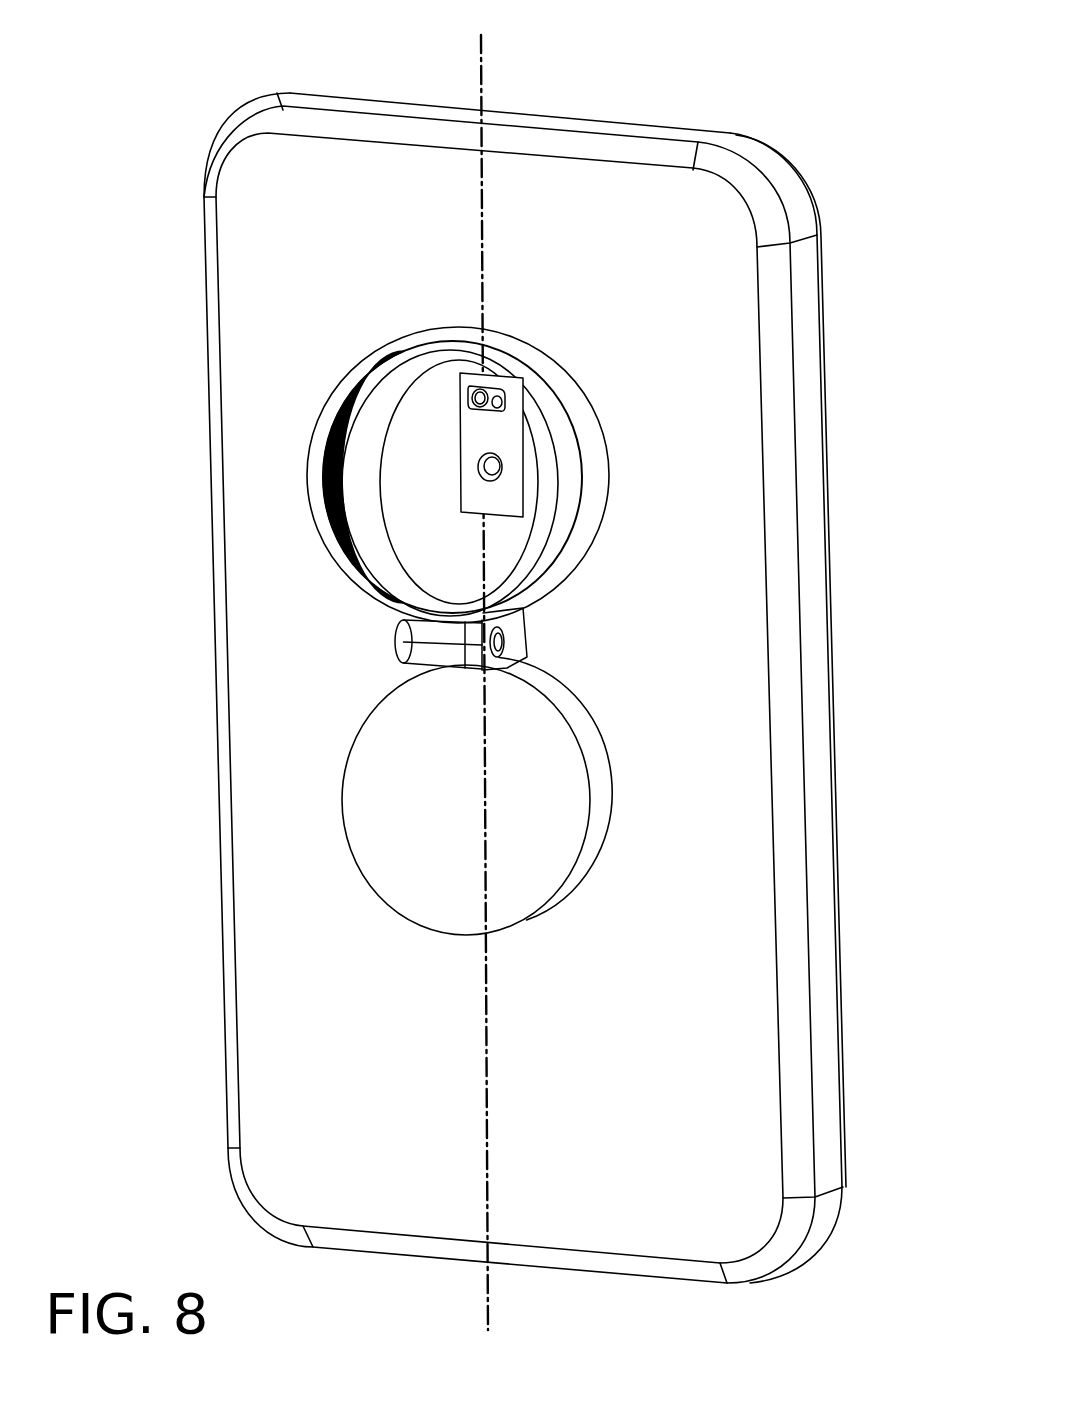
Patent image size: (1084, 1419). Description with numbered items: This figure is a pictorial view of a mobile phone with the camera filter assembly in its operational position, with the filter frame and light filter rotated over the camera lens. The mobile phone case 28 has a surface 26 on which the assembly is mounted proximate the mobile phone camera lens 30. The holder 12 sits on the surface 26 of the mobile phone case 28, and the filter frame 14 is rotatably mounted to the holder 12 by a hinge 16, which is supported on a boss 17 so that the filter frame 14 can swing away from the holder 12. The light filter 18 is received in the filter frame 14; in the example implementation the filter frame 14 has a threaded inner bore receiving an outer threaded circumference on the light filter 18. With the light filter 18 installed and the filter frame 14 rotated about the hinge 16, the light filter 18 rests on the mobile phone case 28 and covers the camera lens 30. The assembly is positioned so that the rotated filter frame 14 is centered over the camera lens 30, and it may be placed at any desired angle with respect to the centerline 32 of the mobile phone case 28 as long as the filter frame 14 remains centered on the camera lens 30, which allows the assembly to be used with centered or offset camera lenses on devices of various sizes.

The holder 12 is at (553, 807).
The filter frame 14 is at (548, 423).
The hinge 16 is at (495, 636).
The boss 17 is at (515, 643).
The light filter 18 is at (592, 490).
The surface 26 is at (708, 973).
The mobile phone case 28 is at (815, 577).
The mobile phone camera lens 30 is at (483, 465).
The centerline 32 is at (481, 209).